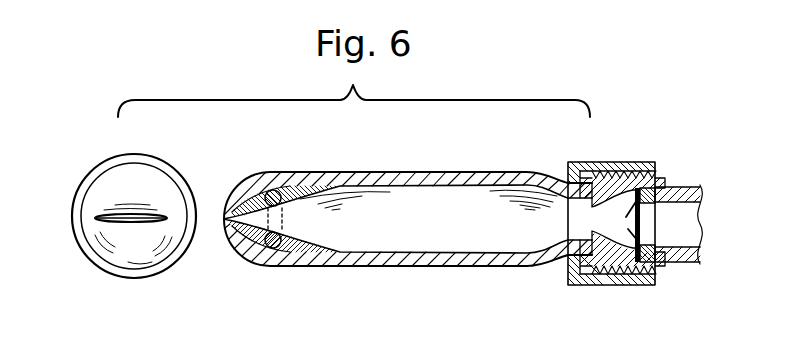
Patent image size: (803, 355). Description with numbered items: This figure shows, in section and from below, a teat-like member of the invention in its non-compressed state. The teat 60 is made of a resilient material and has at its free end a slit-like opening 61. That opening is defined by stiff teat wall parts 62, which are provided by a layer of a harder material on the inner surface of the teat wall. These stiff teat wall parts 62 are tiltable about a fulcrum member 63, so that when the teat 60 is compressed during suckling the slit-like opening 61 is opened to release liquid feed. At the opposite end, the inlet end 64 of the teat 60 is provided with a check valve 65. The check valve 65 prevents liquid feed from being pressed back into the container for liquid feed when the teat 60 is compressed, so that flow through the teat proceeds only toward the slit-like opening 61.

The teat 60 is at (108, 188).
The slit-like opening 61 is at (147, 222).
The stiff teat wall parts 62 is at (255, 257).
The fulcrum member 63 is at (275, 190).
The inlet end 64 is at (688, 225).
The check valve 65 is at (627, 230).